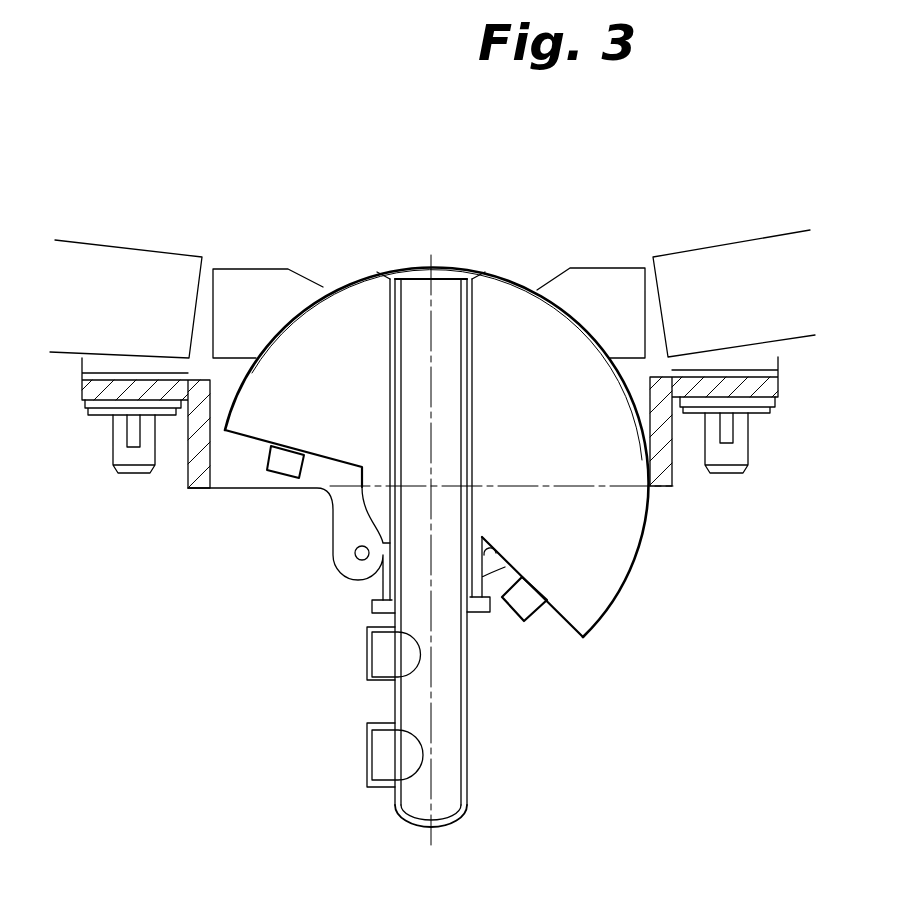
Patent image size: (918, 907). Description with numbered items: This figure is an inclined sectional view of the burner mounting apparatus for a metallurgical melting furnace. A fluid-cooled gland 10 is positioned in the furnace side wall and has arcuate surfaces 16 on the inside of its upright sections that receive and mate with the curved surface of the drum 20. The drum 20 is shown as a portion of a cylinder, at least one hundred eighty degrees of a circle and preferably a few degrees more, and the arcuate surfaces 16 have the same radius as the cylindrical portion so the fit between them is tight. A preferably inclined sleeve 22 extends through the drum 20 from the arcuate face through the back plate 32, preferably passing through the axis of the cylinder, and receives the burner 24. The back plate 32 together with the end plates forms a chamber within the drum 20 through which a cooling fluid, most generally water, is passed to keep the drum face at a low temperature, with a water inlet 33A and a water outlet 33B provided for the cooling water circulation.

The fluid-cooled gland 10 is at (252, 262).
The arcuate surfaces 16 is at (302, 312).
The drum 20 is at (636, 576).
The sleeve 22 is at (390, 373).
The burner 24 is at (463, 372).
The back plate 32 is at (562, 632).
The water inlet 33A is at (283, 477).
The water outlet 33B is at (513, 610).